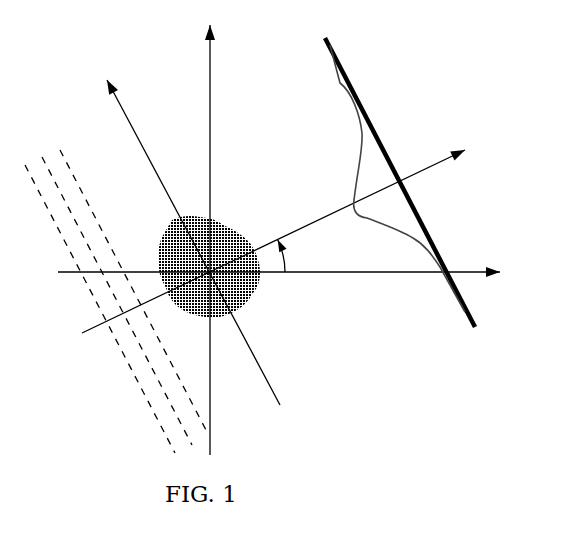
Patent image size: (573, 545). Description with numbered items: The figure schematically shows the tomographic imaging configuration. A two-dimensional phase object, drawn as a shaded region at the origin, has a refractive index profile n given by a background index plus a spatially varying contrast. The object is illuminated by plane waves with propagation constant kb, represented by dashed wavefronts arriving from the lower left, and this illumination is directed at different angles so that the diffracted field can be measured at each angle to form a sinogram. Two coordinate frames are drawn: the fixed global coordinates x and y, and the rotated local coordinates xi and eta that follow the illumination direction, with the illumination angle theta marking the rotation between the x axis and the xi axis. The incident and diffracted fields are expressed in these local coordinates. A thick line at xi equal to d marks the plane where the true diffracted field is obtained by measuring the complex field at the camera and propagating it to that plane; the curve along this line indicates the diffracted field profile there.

The refractive index profile n is at (288, 282).
The x coordinate x is at (285, 291).
The y coordinate y is at (221, 228).
The ξ coordinate xi is at (293, 241).
The η coordinate eta is at (193, 229).
The illumination angle theta is at (296, 256).
The propagation constant kb is at (110, 382).
The measurement plane position d is at (400, 172).